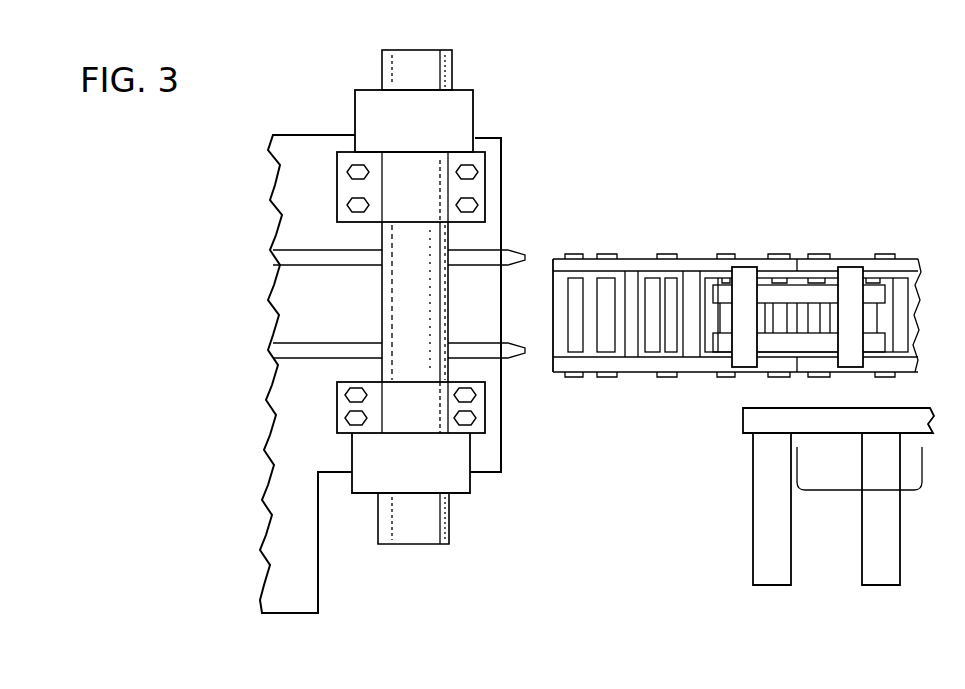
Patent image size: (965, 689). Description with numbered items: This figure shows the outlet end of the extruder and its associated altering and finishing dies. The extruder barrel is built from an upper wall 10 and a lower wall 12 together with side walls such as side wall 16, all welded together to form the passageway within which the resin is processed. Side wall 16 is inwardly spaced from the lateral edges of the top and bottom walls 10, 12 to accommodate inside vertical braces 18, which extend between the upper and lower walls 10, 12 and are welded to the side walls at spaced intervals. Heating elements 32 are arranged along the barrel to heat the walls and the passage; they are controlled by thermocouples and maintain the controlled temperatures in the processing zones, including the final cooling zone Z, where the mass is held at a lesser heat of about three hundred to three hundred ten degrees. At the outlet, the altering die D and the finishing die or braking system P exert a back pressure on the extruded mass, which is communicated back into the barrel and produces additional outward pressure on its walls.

The upper wall 10 is at (560, 263).
The lower wall 12 is at (694, 366).
The side wall 16 is at (557, 311).
The inside vertical brace 18 is at (634, 277).
The heating element 32 is at (606, 254).
The altering die D is at (693, 258).
The finishing die or braking system P is at (501, 439).
The final cooling zone Z is at (838, 496).